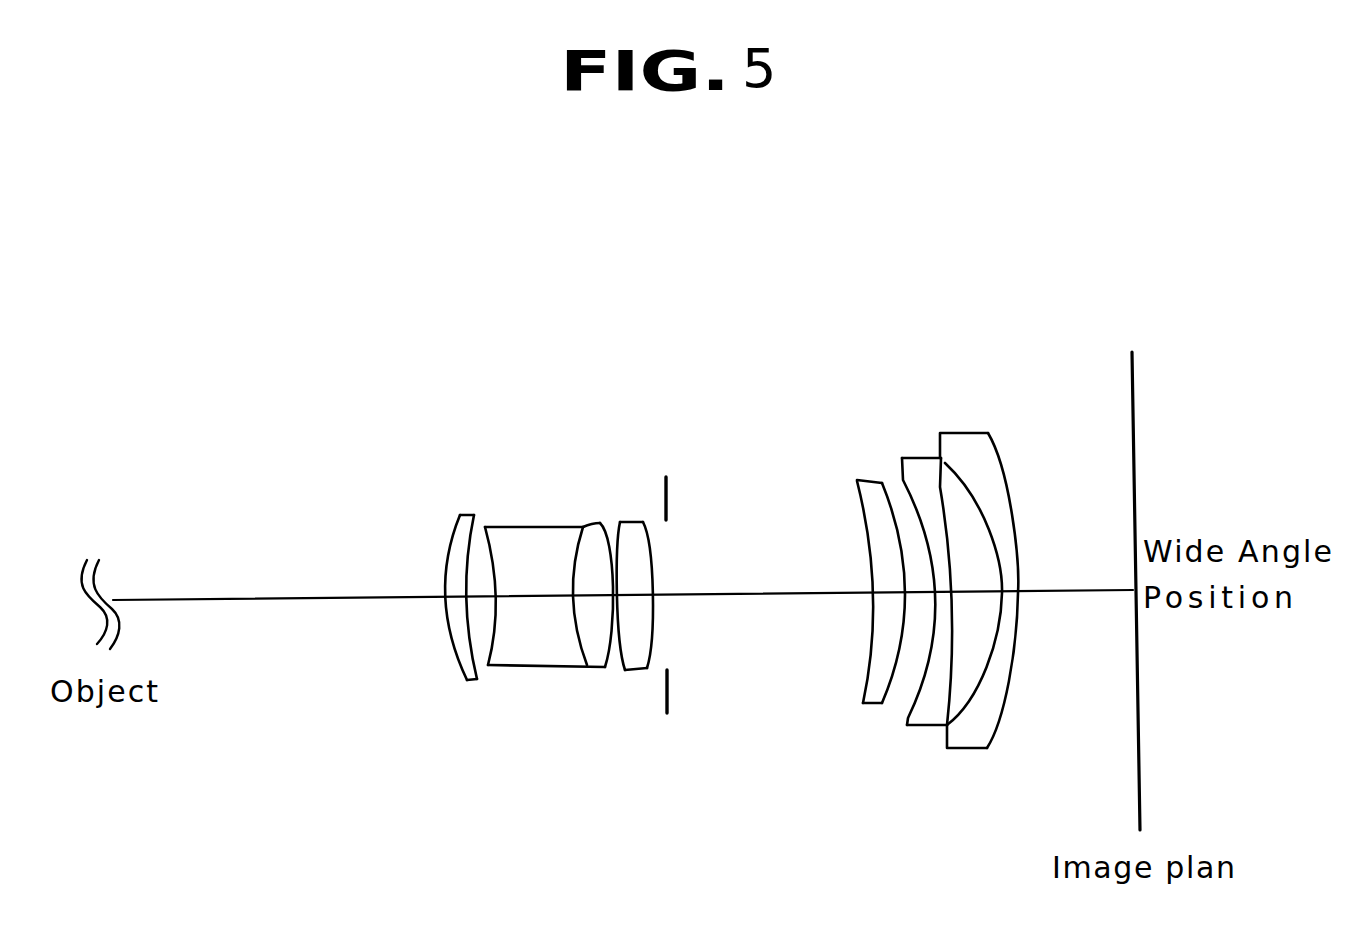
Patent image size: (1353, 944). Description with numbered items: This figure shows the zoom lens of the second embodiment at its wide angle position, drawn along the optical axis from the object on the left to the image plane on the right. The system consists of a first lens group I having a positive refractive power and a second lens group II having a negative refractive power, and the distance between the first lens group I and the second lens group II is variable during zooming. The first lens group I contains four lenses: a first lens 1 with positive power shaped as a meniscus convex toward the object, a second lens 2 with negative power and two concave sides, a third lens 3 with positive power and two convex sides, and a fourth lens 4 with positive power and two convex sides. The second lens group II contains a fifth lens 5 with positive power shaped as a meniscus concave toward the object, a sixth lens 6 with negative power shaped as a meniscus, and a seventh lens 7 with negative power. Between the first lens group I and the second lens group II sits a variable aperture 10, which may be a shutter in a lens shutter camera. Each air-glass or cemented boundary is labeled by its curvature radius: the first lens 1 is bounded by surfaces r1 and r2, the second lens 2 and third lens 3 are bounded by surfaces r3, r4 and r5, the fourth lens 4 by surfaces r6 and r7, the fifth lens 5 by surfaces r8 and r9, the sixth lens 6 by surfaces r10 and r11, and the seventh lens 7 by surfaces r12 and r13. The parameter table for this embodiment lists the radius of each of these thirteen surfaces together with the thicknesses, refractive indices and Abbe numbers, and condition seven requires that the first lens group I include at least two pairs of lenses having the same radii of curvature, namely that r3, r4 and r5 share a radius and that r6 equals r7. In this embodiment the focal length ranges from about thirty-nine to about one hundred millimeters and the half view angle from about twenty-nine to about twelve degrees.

The first lens group I is at (427, 281).
The second lens group II is at (843, 272).
The first lens 1 is at (418, 328).
The second lens 2 is at (473, 327).
The third lens 3 is at (505, 325).
The fourth lens 4 is at (598, 323).
The fifth lens 5 is at (818, 321).
The sixth lens 6 is at (900, 320).
The seventh lens 7 is at (973, 318).
The variable aperture 10 is at (667, 707).
The refractive surface r1 is at (452, 538).
The refractive surface r2 is at (477, 523).
The refractive surface r3 is at (505, 527).
The refractive surface r4 is at (582, 526).
The refractive surface r5 is at (586, 524).
The refractive surface r6 is at (617, 530).
The refractive surface r7 is at (652, 547).
The refractive surface r8 is at (858, 490).
The refractive surface r9 is at (882, 483).
The refractive surface r10 is at (904, 486).
The refractive surface r11 is at (942, 487).
The refractive surface r12 is at (962, 476).
The refractive surface r13 is at (1014, 487).